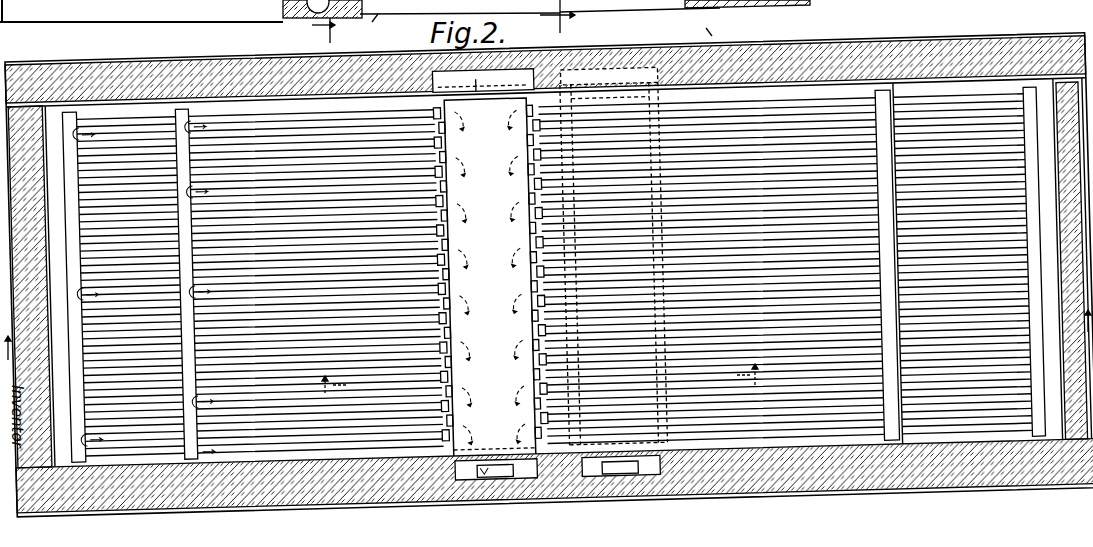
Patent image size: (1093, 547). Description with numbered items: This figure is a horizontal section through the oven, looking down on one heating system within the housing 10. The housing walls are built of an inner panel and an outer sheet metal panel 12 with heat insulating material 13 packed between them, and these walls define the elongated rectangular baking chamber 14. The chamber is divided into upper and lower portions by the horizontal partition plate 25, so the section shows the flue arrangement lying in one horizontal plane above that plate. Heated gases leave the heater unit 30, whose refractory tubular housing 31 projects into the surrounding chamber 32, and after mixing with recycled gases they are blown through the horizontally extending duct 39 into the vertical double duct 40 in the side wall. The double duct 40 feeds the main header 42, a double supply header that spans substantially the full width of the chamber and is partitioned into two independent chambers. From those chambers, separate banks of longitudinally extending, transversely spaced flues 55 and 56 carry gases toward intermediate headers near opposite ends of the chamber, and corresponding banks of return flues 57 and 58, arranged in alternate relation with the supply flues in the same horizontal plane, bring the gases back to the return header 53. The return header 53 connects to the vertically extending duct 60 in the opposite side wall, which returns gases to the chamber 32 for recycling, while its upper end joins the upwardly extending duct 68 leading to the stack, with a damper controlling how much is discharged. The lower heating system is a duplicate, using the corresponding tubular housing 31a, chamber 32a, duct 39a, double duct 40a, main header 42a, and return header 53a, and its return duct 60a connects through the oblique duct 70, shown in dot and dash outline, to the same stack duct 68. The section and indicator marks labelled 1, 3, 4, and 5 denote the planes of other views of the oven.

The section line 1- 1 is at (546, 342).
The section line 3- 3 is at (323, 30).
The section line 4- 4 is at (557, 18).
The section line 5- 5 is at (540, 386).
The housing 10 is at (763, 44).
The outer sheet metal panel 12 is at (684, 45).
The heat insulating material 13 is at (745, 47).
The baking chamber 14 is at (133, 115).
The partition plate 25 is at (222, 104).
The heater unit 30 is at (283, 7).
The tubular housing 31 is at (296, 18).
The tubular housing 31a is at (778, 0).
The chamber 32 is at (369, 25).
The chamber 32a is at (705, 23).
The horizontally extending duct 39 is at (460, 7).
The horizontally extending duct 39a is at (640, 6).
The double duct 40 is at (493, 72).
The double duct 40a is at (607, 70).
The main header 42 is at (423, 93).
The main header 42a is at (668, 100).
The return header 53 is at (507, 135).
The return header 53a is at (633, 68).
The flues 55 is at (357, 160).
The flues 56 is at (812, 160).
The return flues 57 is at (298, 157).
The return flues 58 is at (850, 173).
The vertically extending duct 60 is at (460, 487).
The return duct 60a is at (581, 487).
The upwardly extending duct 68 is at (470, 487).
The duct 70 is at (642, 478).